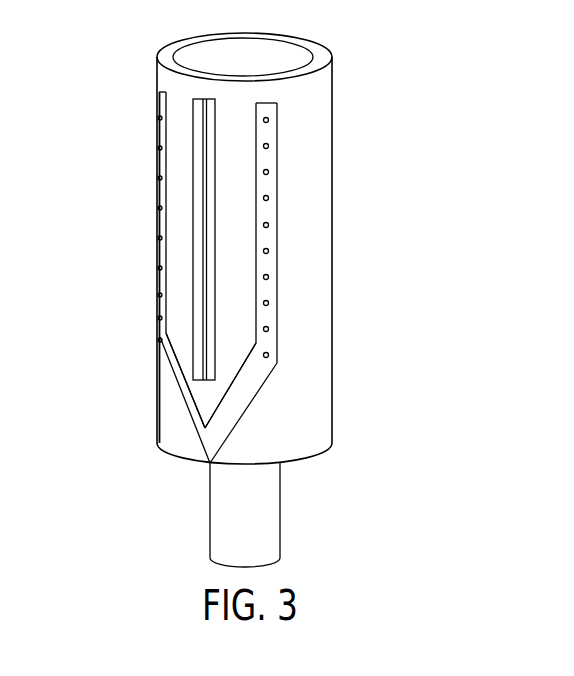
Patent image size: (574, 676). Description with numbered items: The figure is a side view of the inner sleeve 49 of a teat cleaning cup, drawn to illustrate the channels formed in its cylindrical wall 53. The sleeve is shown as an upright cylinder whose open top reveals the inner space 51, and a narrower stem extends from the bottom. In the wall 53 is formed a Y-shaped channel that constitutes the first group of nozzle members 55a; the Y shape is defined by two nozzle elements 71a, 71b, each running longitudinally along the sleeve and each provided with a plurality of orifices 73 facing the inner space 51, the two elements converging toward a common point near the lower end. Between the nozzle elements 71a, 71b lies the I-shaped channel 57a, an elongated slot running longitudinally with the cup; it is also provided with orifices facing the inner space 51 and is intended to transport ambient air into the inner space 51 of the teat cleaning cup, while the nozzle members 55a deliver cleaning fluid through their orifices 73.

The inner sleeve 49 is at (374, 279).
The inner space 51 is at (283, 60).
The cylindrical wall 53 is at (332, 380).
The first group of nozzle members 55a is at (222, 417).
The I-shaped channel 57a is at (202, 257).
The nozzle element 71a is at (158, 97).
The nozzle element 71b is at (277, 104).
The orifices 73 is at (160, 118).